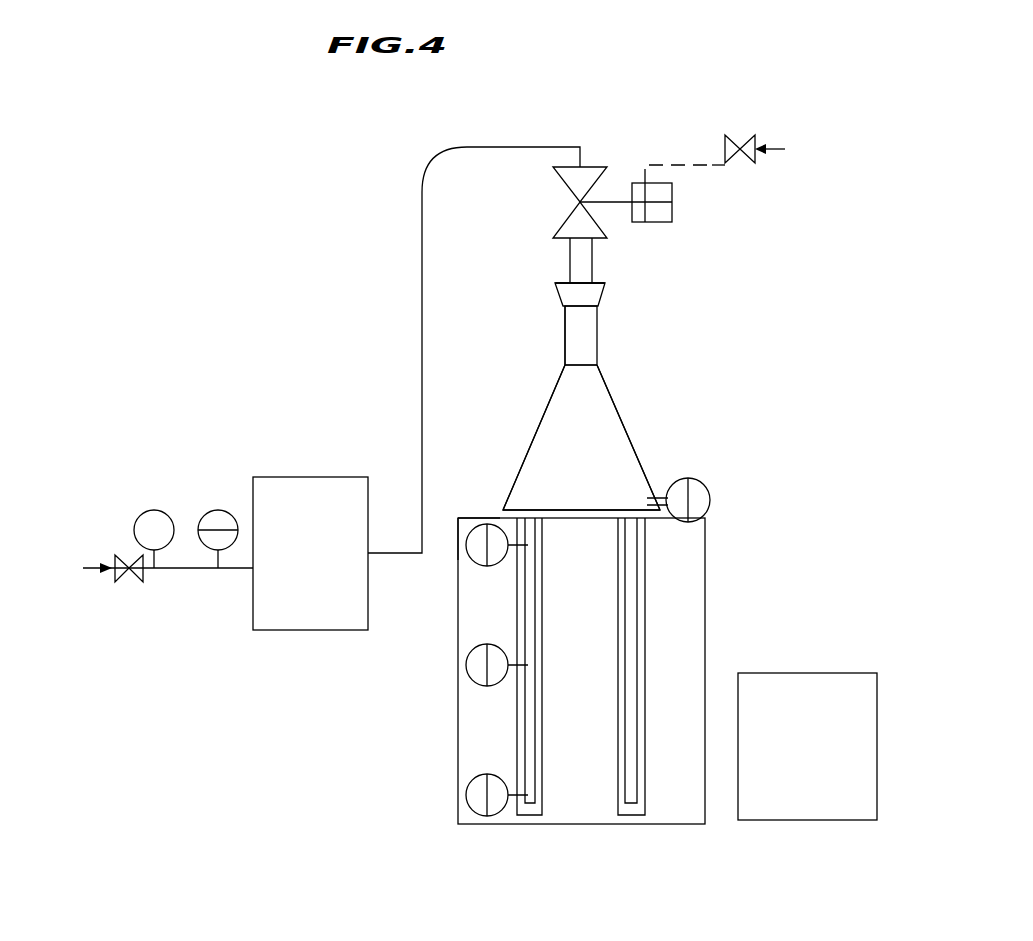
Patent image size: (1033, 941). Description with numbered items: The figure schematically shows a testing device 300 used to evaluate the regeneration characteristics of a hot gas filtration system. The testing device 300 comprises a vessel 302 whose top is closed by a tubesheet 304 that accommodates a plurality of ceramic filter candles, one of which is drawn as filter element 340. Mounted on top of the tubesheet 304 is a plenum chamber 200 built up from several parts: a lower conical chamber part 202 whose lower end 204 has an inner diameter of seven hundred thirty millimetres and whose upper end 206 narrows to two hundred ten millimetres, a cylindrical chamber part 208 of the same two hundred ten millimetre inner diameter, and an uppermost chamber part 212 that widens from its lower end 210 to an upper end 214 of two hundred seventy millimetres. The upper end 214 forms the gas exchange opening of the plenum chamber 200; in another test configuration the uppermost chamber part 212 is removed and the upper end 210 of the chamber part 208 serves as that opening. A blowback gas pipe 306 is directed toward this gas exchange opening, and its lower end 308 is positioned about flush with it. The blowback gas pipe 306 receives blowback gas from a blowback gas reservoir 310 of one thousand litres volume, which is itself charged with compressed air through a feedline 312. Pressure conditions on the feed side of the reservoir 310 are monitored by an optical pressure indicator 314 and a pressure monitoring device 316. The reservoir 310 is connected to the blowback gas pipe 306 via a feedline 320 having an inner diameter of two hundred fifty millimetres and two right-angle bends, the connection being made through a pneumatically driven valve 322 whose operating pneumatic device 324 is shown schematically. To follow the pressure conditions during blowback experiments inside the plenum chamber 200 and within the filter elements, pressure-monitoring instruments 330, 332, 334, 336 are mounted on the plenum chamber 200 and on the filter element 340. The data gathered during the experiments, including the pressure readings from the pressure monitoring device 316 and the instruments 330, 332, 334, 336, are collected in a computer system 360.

The plenum chamber 200 is at (640, 378).
The chamber part 202 is at (650, 430).
The lower end of chamber part 204 is at (503, 513).
The upper end of chamber part 206 is at (565, 365).
The chamber part 208 is at (600, 335).
The upper end of chamber part / lower end of chamber part 210 is at (565, 310).
The chamber part 212 is at (608, 297).
The upper end of chamber part 214 is at (605, 280).
The testing device 300 is at (300, 305).
The vessel 302 is at (705, 585).
The tubesheet 304 is at (458, 518).
The blowback gas pipe 306 is at (570, 255).
The lower end of blowback pipe 308 is at (562, 277).
The blowback gas reservoir 310 is at (307, 502).
The feedline 312 is at (95, 570).
The optical pressure indicator 314 is at (154, 510).
The pressure monitoring device 316 is at (218, 510).
The feedline 320 is at (422, 237).
The pneumatically driven valve 322 is at (560, 200).
The pneumatic device 324 is at (707, 140).
The pressure-monitoring instrument 330 is at (712, 478).
The pressure-monitoring instrument 332 is at (475, 556).
The pressure-monitoring instrument 334 is at (470, 665).
The pressure-monitoring instrument 336 is at (470, 790).
The filter element 340 is at (547, 700).
The computer system 360 is at (810, 690).